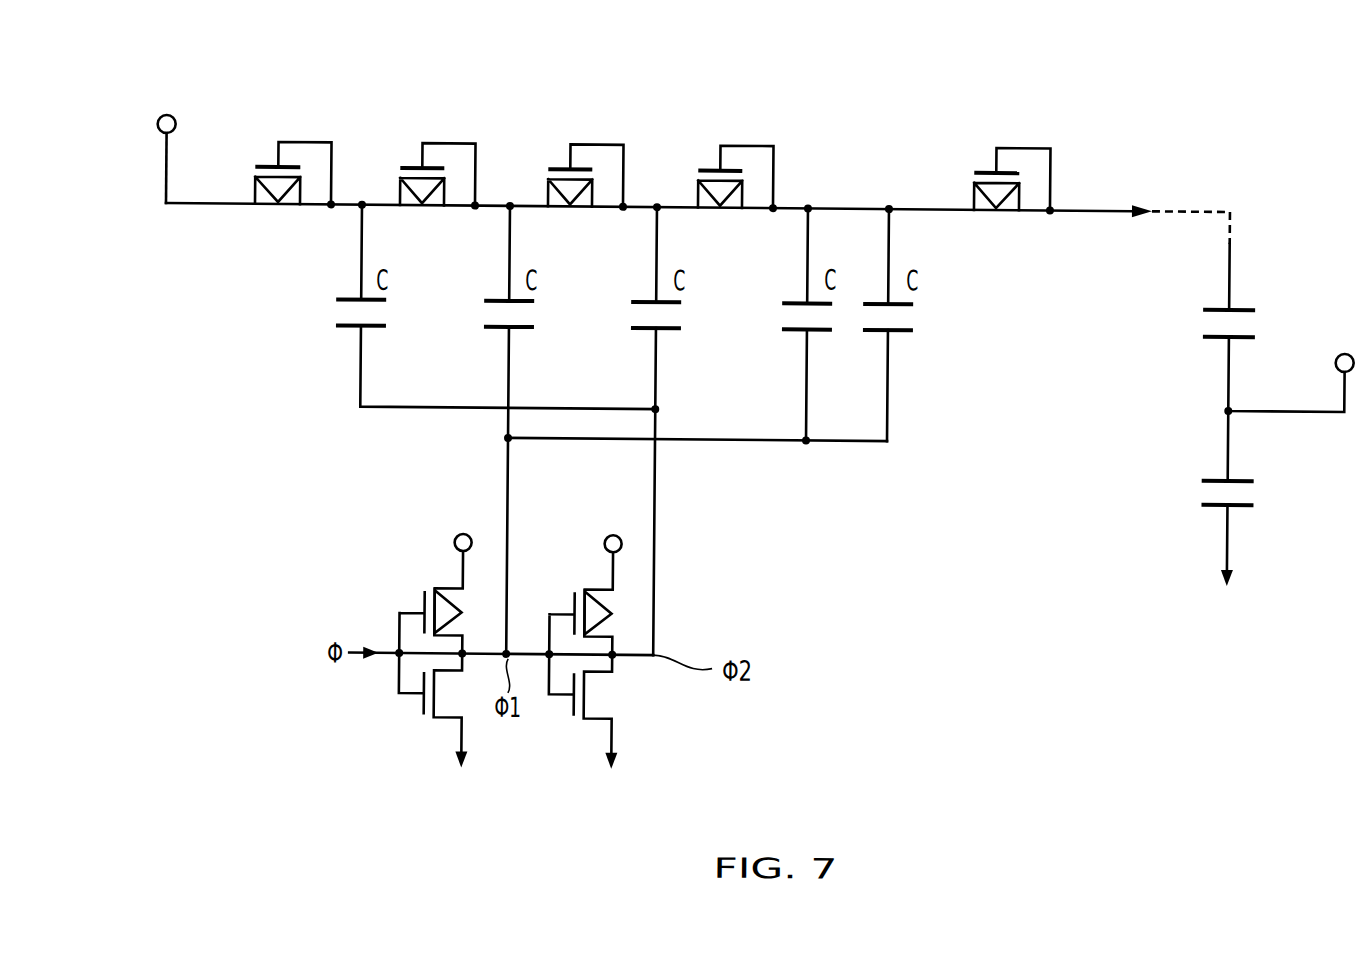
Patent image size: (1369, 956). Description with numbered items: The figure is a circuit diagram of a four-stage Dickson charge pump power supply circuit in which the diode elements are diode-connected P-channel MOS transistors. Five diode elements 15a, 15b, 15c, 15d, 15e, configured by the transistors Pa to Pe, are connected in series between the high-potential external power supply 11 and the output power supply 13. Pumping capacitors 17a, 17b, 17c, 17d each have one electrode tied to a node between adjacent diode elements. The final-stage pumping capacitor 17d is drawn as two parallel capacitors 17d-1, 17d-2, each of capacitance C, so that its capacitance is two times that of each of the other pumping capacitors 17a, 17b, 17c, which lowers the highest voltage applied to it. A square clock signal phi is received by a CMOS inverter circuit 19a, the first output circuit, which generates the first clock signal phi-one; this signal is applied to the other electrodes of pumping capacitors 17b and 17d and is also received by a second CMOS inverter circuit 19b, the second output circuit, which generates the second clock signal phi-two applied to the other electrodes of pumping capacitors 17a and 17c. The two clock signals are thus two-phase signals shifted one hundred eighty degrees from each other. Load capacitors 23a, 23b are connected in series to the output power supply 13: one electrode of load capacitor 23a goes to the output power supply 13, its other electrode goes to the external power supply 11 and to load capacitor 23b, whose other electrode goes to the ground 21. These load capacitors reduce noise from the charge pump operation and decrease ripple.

The external power supply 11 is at (166, 114).
The output power supply 13 is at (1143, 197).
The diode element 15a is at (255, 159).
The diode element 15b is at (400, 159).
The diode element 15c is at (548, 159).
The diode element 15d is at (698, 159).
The diode element 15e is at (974, 159).
The pumping capacitor 17a is at (383, 328).
The pumping capacitor 17b is at (531, 328).
The pumping capacitor 17c is at (680, 326).
The final-stage pumping capacitor 17d is at (787, 324).
The pumping capacitor 17d-1 is at (822, 333).
The pumping capacitor 17d-2 is at (903, 333).
The CMOS inverter circuit 19a is at (445, 653).
The CMOS inverter circuit 19b is at (595, 653).
The ground 21 is at (466, 771).
The load capacitor 23a is at (1197, 314).
The load capacitor 23b is at (1197, 488).